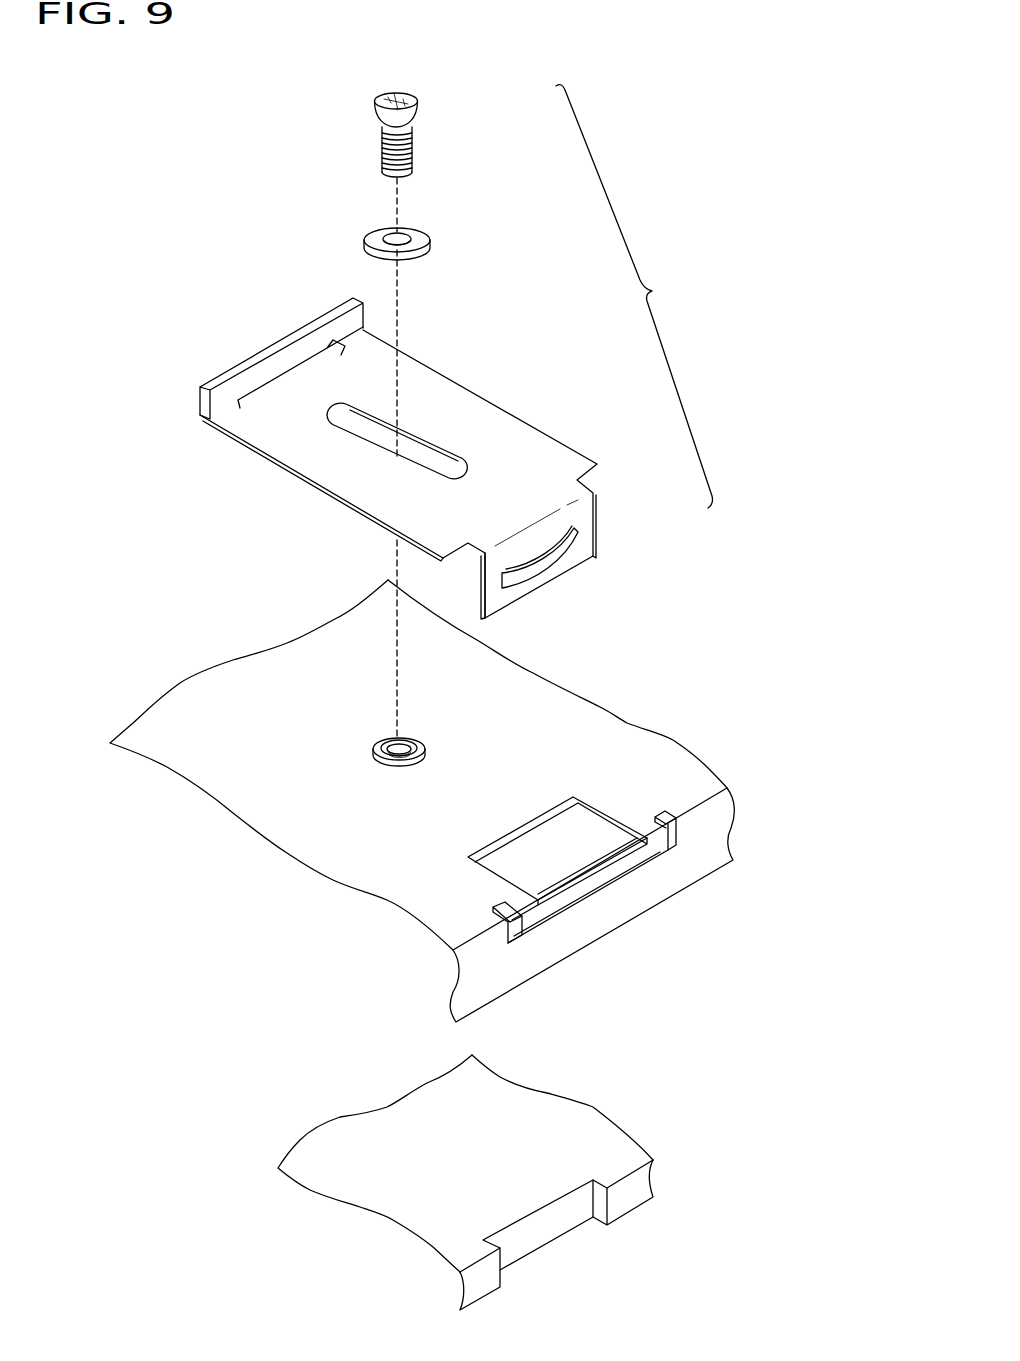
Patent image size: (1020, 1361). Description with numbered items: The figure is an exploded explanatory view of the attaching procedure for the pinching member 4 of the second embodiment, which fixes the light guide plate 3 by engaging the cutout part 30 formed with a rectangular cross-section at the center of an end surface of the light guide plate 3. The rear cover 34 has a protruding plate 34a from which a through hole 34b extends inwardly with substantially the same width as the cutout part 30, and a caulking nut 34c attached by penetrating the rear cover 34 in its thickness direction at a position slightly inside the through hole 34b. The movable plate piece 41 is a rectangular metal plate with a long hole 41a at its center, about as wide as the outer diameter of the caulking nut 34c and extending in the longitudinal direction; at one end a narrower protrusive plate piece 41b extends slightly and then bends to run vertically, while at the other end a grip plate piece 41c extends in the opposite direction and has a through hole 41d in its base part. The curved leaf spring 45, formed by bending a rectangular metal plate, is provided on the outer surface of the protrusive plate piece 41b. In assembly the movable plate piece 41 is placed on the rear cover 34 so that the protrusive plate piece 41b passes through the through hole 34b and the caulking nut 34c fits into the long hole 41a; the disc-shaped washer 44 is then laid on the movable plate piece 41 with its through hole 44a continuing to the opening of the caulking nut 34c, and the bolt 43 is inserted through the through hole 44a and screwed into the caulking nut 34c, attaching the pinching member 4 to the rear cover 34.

The light guide plate 3 is at (481, 1182).
The cutout part 30 is at (562, 1225).
The rear cover 34 is at (472, 801).
The protruding plate 34a is at (717, 822).
The through hole 34b is at (607, 818).
The caulking nut 34c is at (387, 763).
The pinching member 4 is at (634, 296).
The movable plate piece 41 is at (417, 448).
The long hole 41a is at (427, 430).
The protrusive plate piece 41b is at (481, 582).
The grip plate piece 41c is at (267, 389).
The through hole 41d is at (240, 408).
The bolt 43 is at (418, 105).
The washer 44 is at (418, 219).
The through hole 44a is at (388, 231).
The curved leaf spring 45 is at (595, 535).